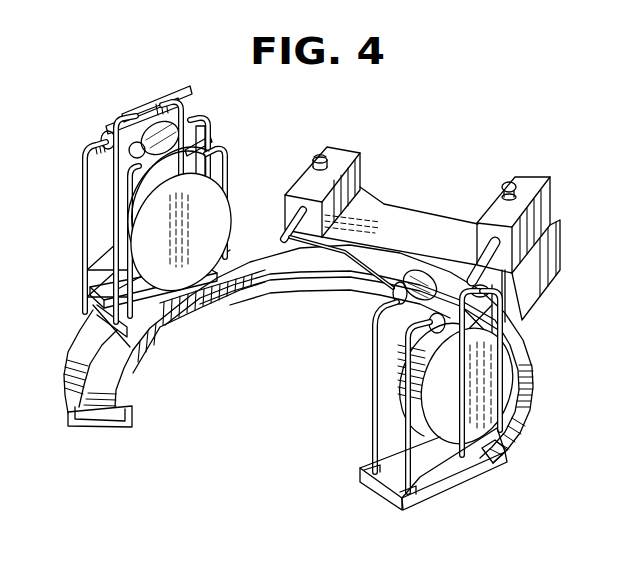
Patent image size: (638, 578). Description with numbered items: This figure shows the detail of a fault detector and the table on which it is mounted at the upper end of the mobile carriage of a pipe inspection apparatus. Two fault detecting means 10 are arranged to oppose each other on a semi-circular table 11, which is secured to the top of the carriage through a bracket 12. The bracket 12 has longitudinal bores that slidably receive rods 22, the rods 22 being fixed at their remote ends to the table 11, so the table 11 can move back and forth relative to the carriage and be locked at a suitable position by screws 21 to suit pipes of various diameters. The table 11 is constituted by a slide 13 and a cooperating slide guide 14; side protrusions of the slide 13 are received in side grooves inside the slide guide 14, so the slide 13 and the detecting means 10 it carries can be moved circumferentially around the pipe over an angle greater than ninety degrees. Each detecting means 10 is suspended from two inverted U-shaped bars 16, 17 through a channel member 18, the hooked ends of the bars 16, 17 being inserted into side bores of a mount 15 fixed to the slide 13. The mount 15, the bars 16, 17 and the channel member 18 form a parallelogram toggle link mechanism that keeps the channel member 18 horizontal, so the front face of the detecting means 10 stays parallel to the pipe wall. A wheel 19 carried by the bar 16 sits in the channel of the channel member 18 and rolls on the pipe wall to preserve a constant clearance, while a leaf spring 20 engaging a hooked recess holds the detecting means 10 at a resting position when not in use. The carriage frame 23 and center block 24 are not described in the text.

The fault detecting means 10 is at (498, 368).
The semi-circular table 11 is at (537, 407).
The bracket 12 is at (547, 202).
The slide 13 is at (112, 340).
The slide guide 14 is at (95, 427).
The mount 15 is at (448, 478).
The inversed U-shaped bar 16 is at (372, 428).
The inversed U-shaped bar 17 is at (440, 492).
The channel member 18 is at (502, 310).
The wheel 19 is at (397, 272).
The leaf spring 20 is at (473, 465).
The screw 21 is at (505, 182).
The rod 22 is at (482, 253).
The left carriage frame 23 is at (167, 211).
The center block 24 is at (381, 206).